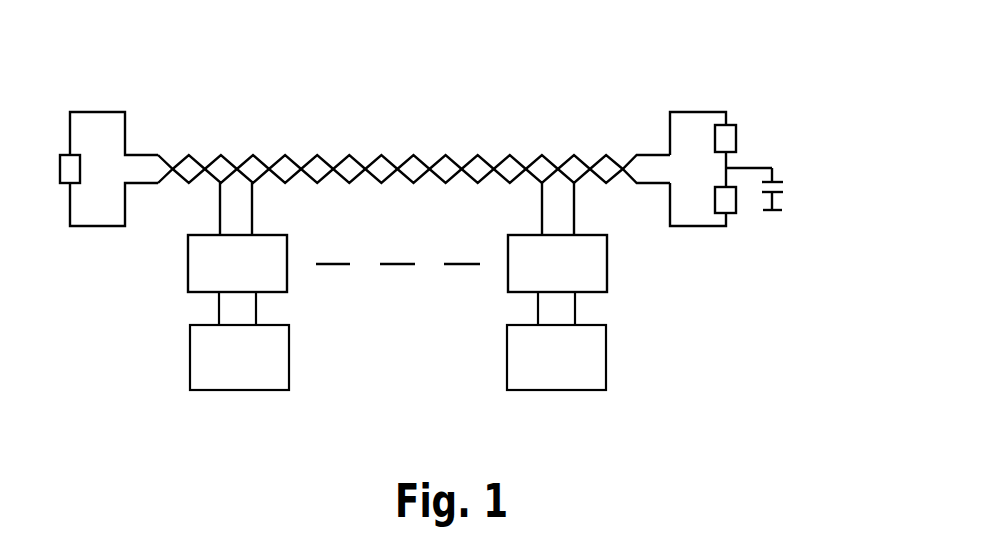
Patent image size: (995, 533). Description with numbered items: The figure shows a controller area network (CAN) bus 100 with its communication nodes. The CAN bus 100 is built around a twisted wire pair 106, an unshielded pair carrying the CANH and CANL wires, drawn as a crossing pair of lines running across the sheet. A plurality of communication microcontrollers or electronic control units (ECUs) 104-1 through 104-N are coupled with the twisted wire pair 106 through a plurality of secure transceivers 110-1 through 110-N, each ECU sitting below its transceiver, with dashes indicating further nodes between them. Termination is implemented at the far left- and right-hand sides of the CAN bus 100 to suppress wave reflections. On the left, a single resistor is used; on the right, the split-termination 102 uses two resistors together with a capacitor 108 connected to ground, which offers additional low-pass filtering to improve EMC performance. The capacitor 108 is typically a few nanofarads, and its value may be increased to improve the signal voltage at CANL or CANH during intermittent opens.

The controller area network (CAN) bus 100 is at (588, 75).
The bus termination 102 is at (763, 168).
The electronic control unit (ECU) 104-1 is at (235, 391).
The electronic control unit (ECU) 104-N is at (553, 391).
The twisted wire pair 106 is at (313, 157).
The capacitor 108 is at (783, 193).
The secure transceiver 110-1 is at (287, 284).
The secure transceiver 110-N is at (607, 291).